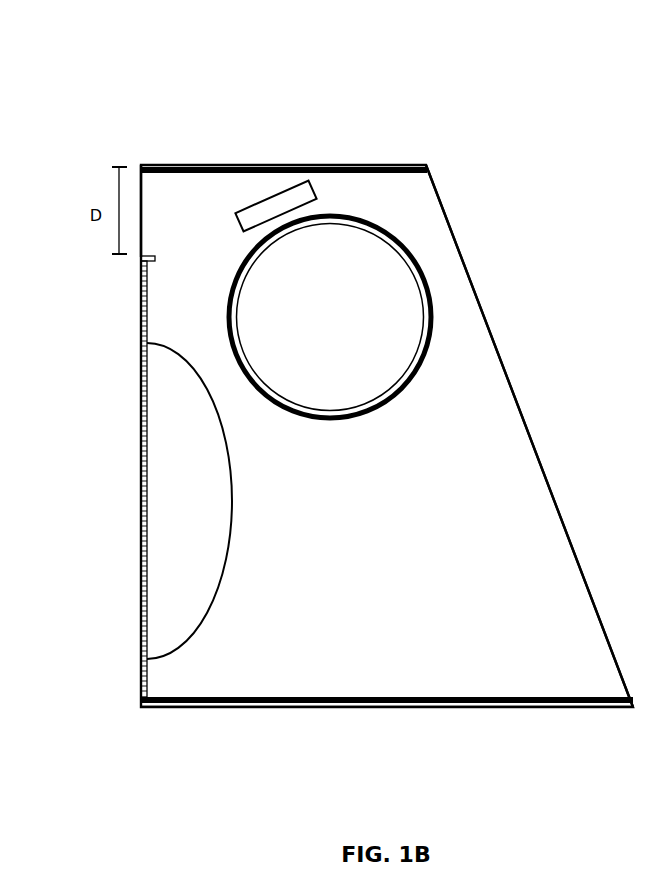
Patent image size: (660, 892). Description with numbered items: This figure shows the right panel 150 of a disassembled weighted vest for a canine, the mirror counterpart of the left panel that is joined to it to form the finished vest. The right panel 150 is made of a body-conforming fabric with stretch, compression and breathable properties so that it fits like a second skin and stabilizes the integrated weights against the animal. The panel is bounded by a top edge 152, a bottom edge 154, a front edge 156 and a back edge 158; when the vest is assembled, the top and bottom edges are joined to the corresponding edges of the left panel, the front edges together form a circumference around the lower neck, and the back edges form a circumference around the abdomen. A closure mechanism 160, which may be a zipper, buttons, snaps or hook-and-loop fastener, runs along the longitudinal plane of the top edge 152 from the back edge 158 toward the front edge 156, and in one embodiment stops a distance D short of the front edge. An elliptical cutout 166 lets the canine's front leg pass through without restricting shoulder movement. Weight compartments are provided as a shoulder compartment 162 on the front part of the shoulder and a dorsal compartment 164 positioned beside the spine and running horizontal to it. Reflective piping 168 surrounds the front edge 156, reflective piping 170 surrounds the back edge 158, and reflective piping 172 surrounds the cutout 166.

The right panel 150 is at (538, 145).
The top edge 152 is at (142, 208).
The bottom edge 154 is at (506, 380).
The front edge 156 is at (333, 163).
The back edge 158 is at (508, 705).
The closure mechanism 160 is at (152, 412).
The weight compartment 162 is at (282, 205).
The weight compartment 164 is at (168, 548).
The cutout 166 is at (407, 260).
The reflective piping 168 is at (282, 169).
The reflective piping 170 is at (408, 698).
The reflective piping 172 is at (433, 285).